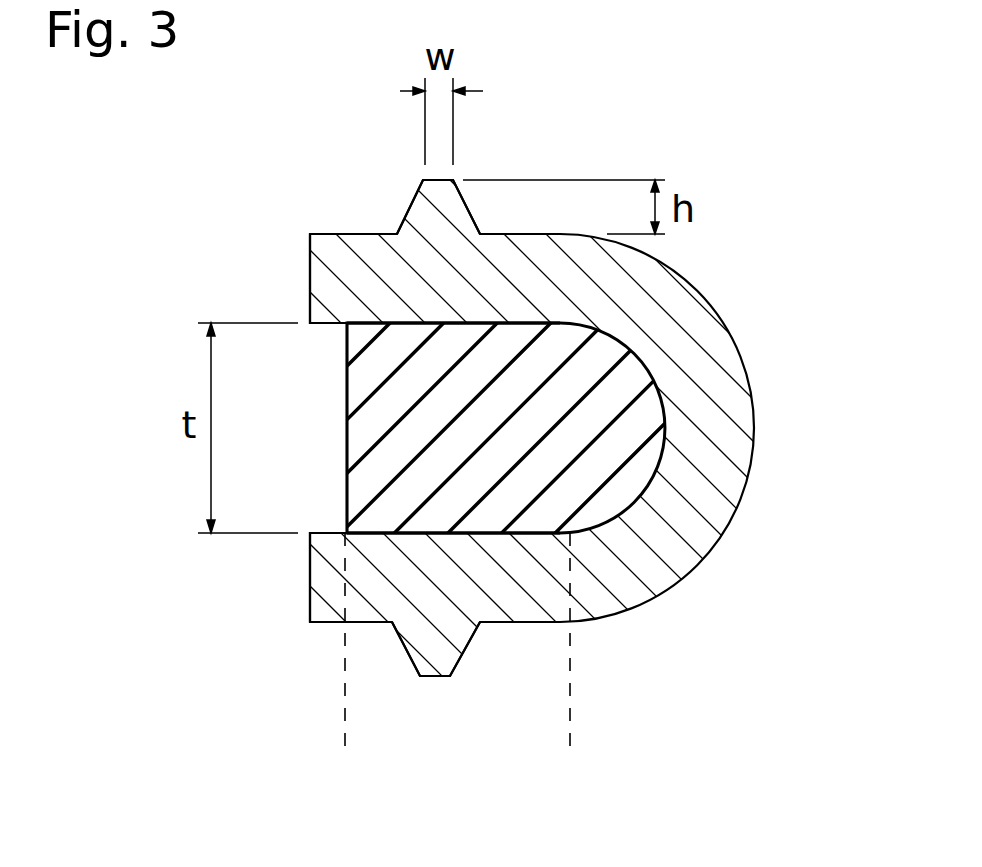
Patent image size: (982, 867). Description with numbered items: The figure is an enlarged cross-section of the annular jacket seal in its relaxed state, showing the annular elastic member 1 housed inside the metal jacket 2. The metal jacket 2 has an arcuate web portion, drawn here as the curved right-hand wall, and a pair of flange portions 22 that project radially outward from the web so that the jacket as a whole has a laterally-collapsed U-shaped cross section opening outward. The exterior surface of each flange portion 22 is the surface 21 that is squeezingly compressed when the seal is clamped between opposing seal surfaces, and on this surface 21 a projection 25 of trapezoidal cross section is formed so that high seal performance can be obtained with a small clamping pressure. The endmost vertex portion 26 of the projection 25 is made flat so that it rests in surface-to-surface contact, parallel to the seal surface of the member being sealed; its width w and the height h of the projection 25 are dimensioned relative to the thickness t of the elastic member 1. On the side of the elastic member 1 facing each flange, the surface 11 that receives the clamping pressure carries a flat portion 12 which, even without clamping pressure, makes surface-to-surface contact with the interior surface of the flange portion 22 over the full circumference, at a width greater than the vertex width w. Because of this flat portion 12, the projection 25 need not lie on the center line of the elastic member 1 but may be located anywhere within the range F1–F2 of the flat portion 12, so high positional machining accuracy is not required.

The annular elastic member 1 is at (638, 415).
The metal jacket 2 is at (717, 270).
The surface of the elastic member 11 is at (404, 318).
The flat portion 12 is at (478, 318).
The surface being squeezingly compressed 21 is at (350, 233).
The flange portion 22 is at (330, 285).
The projection 25 is at (447, 207).
The vertex portion 26 is at (453, 180).
The range limit F1 is at (347, 668).
The range limit F2 is at (572, 668).